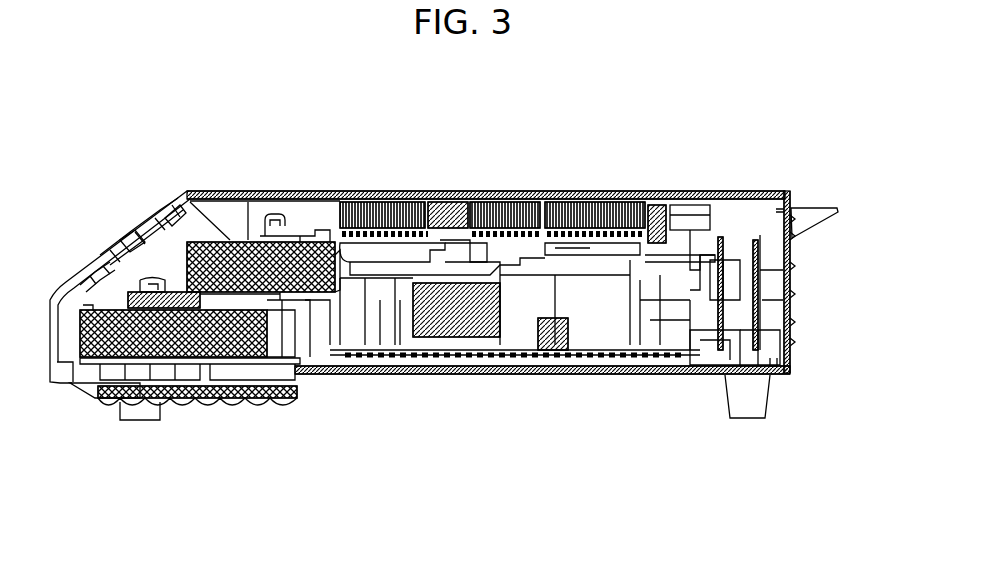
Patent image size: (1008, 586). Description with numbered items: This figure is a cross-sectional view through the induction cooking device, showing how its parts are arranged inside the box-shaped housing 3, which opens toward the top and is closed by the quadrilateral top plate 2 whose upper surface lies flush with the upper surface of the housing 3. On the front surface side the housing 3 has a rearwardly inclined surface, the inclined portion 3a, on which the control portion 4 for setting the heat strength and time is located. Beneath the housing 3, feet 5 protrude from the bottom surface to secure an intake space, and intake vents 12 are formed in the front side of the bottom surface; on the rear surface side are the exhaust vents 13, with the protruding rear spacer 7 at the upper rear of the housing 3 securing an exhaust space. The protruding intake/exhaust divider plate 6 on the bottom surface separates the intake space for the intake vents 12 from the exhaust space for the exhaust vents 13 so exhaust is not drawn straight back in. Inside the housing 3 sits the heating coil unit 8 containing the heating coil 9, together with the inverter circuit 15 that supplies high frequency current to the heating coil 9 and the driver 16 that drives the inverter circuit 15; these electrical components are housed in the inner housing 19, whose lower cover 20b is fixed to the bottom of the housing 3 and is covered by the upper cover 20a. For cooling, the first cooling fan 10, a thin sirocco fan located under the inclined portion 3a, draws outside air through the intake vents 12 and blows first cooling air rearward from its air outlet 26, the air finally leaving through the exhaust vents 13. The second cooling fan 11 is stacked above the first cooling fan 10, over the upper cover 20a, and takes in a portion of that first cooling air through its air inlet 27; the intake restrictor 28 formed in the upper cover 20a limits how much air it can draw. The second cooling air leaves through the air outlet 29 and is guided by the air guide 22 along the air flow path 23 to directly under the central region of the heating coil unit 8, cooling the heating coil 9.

The top plate 2 is at (692, 187).
The housing 3 is at (780, 187).
The inclined portion 3a is at (165, 197).
The control portion 4 is at (104, 250).
The feet 5 is at (140, 412).
The intake/exhaust divider plate 6 is at (420, 375).
The rear spacer 7 is at (815, 207).
The heating coil unit 8 is at (352, 195).
The heating coil 9 is at (592, 193).
The first cooling fan 10 is at (52, 295).
The second cooling fan 11 is at (190, 193).
The intake vents 12 is at (220, 398).
The exhaust vents 13 is at (797, 295).
The inverter circuit 15 is at (502, 377).
The driver 16 is at (637, 375).
The inner housing 19 is at (462, 193).
The upper cover 20a is at (793, 286).
The lower cover 20b is at (765, 352).
The air guide 22 is at (390, 193).
The air flow path 23 is at (540, 193).
The air outlet 26 is at (287, 388).
The air inlet 27 is at (313, 345).
The intake restrictor 28 is at (240, 196).
The air outlet 29 is at (300, 193).